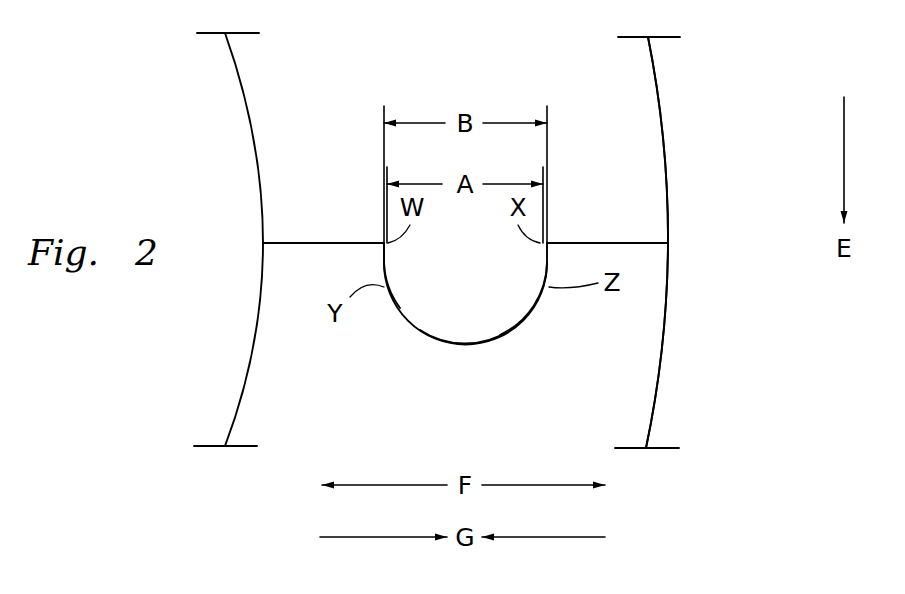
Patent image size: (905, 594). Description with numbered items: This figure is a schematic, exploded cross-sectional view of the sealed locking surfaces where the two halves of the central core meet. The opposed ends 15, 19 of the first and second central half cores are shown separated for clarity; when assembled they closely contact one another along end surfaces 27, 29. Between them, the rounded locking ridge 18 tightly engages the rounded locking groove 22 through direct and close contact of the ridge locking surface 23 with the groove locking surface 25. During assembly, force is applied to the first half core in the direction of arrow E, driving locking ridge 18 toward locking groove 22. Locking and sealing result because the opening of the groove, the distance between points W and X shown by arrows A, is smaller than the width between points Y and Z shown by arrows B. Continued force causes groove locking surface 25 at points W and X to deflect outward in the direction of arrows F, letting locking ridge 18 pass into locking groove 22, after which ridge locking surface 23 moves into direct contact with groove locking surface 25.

The opposed end 15 is at (660, 101).
The opposed end 19 is at (667, 291).
The end surface 27 is at (296, 243).
The end surface 29 is at (312, 243).
The rounded locking ridge 18 is at (485, 317).
The ridge locking surface 23 is at (400, 308).
The groove locking surface 25 is at (450, 347).
The rounded locking groove 22 is at (522, 327).